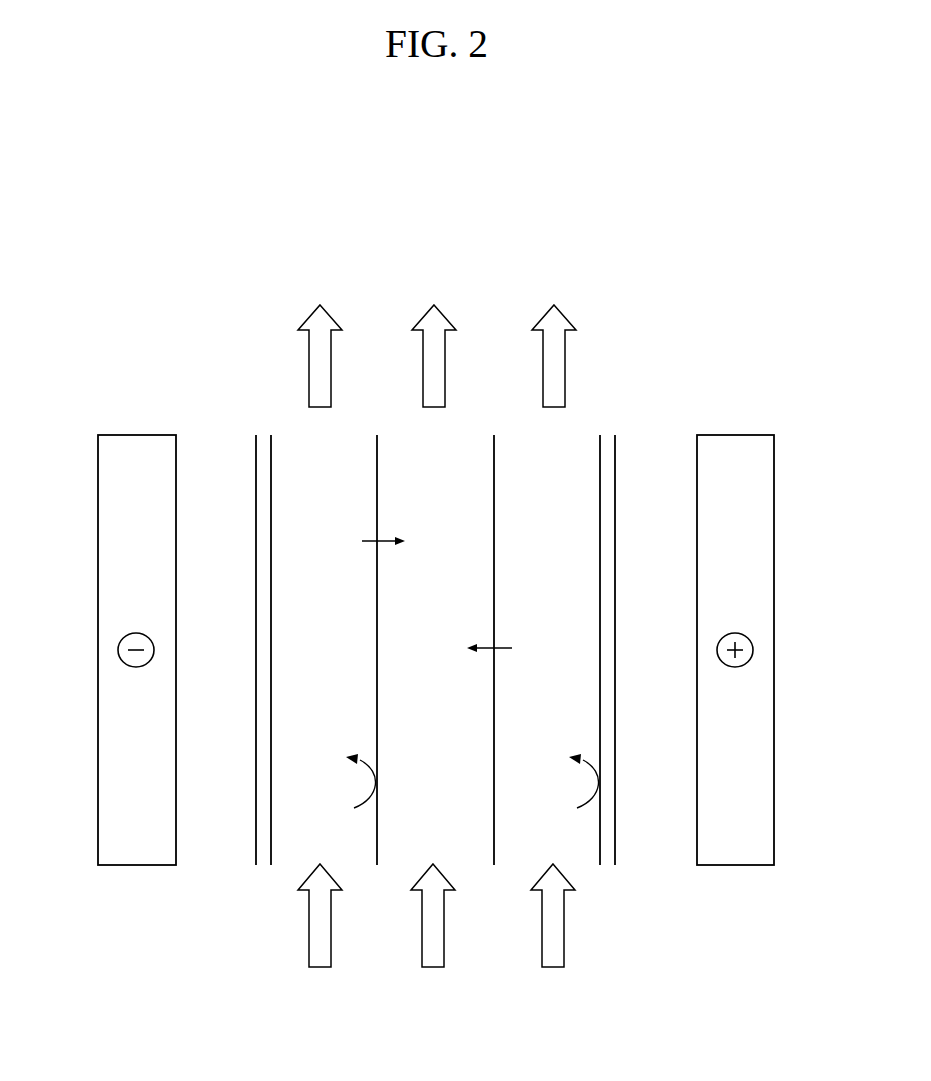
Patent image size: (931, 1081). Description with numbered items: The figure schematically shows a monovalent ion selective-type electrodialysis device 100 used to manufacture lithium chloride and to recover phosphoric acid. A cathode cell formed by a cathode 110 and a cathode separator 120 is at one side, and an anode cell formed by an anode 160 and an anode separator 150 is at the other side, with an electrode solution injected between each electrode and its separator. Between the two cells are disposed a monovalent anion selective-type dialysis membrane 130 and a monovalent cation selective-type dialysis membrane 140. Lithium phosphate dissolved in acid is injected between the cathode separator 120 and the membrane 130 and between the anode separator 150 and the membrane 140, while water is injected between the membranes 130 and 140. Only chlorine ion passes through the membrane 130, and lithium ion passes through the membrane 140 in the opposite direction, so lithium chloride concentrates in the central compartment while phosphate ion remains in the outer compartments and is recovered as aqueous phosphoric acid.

The monovalent ion selective-type electrodialysis device 100 is at (452, 198).
The cathode 110 is at (137, 632).
The cathode separator 120 is at (263, 632).
The monovalent anion selective-type dialysis membrane 130 is at (377, 632).
The monovalent cation selective-type dialysis membrane 140 is at (495, 632).
The anode separator 150 is at (608, 632).
The anode 160 is at (735, 632).